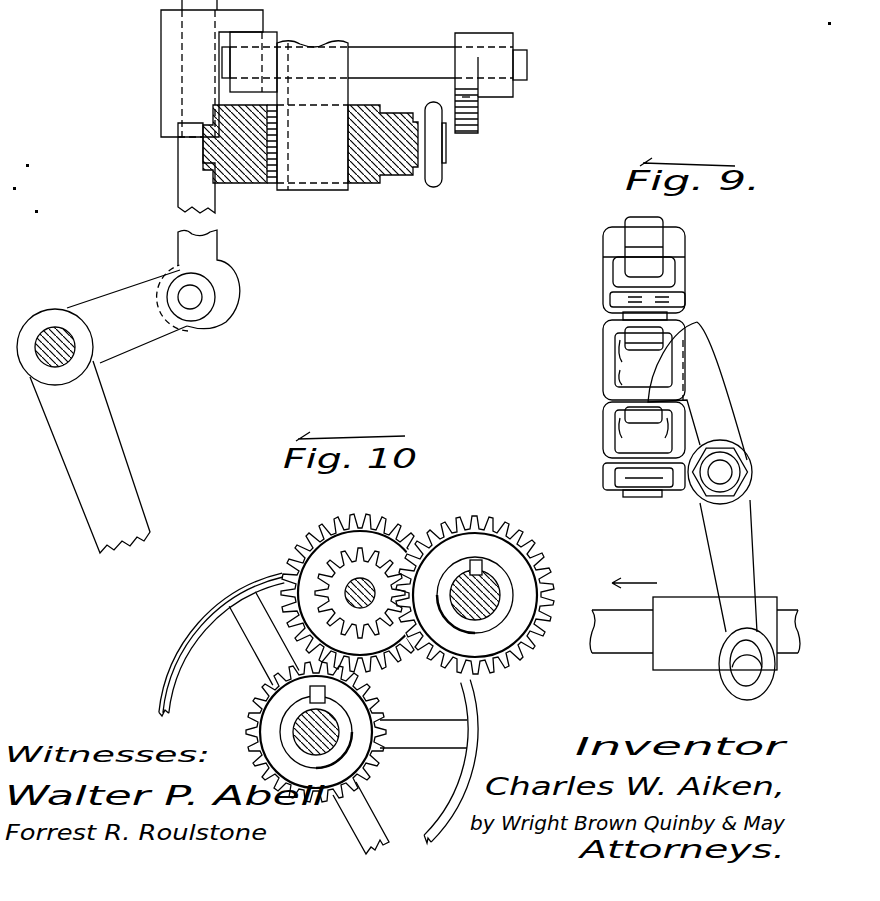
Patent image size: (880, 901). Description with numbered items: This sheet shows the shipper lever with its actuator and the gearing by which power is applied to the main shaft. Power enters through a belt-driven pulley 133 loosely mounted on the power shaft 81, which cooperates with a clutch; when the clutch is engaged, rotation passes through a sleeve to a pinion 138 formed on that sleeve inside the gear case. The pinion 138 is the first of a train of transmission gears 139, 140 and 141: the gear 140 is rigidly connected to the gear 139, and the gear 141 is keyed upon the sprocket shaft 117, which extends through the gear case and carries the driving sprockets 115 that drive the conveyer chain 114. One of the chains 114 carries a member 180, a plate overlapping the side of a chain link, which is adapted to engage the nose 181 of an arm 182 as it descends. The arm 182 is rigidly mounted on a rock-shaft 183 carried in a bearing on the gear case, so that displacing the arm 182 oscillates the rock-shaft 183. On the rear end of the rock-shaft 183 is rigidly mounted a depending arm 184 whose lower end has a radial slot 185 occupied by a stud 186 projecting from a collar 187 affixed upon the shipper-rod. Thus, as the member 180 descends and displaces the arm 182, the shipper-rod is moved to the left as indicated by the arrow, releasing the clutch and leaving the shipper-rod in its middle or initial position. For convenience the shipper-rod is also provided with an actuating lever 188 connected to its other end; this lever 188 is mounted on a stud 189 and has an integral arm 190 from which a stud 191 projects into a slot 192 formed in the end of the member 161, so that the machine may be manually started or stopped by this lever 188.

In FIG. 10, the power shaft 81 is at (338, 750).
In FIG. 9, the conveyer chain 114 is at (437, 187).
In FIG. 9, the driving sprocket 115 is at (372, 182).
In FIG. 9, the sprocket shaft 117 is at (304, 192).
In FIG. 10, the sprocket shaft 117 is at (490, 594).
In FIG. 10, the pulley 133 is at (186, 643).
In FIG. 10, the pinion 138 is at (258, 690).
In FIG. 10, the transmission gear 139 is at (301, 541).
In FIG. 10, the transmission gear 140 is at (366, 556).
In FIG. 10, the transmission gear 141 is at (508, 669).
In FIG. 9, the member 161 is at (178, 200).
In FIG. 9, the member 180 is at (685, 296).
In FIG. 9, the nose 181 is at (478, 133).
In FIG. 9, the arm 182 is at (485, 36).
In FIG. 9, the rock-shaft 183 is at (528, 64).
In FIG. 9, the depending arm 184 is at (272, 34).
In FIG. 9, the radial slot 185 is at (739, 650).
In FIG. 9, the stud 186 is at (743, 677).
In FIG. 9, the collar 187 is at (164, 40).
In FIG. 9, the actuating lever 188 is at (131, 474).
In FIG. 9, the stud 189 is at (52, 333).
In FIG. 9, the integral arm 190 is at (140, 332).
In FIG. 9, the stud 191 is at (185, 288).
In FIG. 9, the slot 192 is at (215, 294).